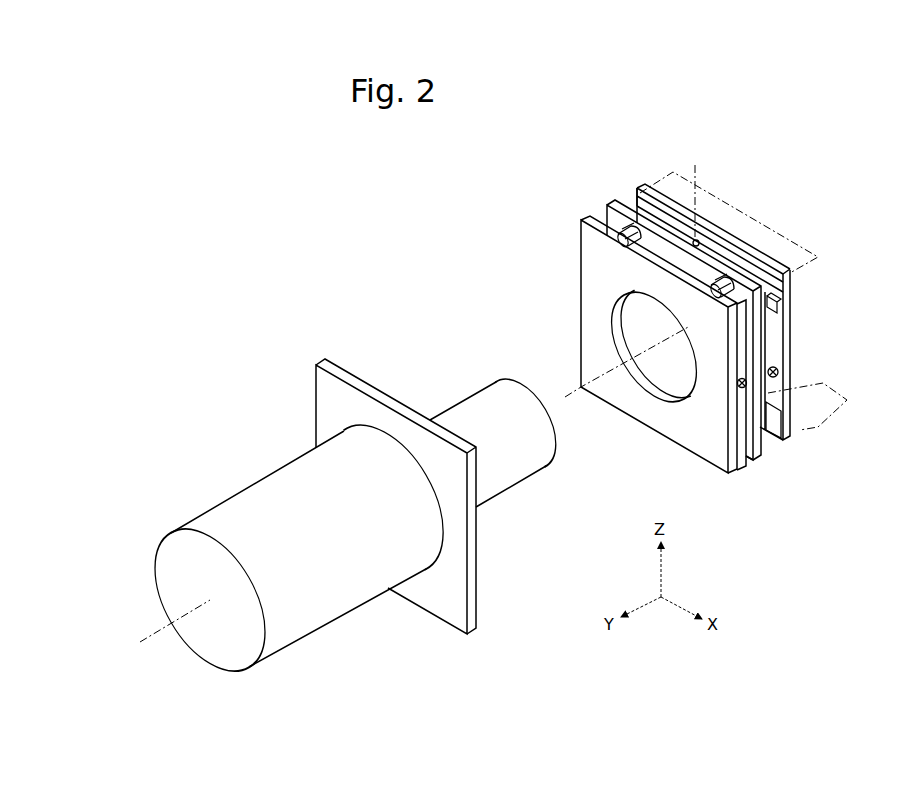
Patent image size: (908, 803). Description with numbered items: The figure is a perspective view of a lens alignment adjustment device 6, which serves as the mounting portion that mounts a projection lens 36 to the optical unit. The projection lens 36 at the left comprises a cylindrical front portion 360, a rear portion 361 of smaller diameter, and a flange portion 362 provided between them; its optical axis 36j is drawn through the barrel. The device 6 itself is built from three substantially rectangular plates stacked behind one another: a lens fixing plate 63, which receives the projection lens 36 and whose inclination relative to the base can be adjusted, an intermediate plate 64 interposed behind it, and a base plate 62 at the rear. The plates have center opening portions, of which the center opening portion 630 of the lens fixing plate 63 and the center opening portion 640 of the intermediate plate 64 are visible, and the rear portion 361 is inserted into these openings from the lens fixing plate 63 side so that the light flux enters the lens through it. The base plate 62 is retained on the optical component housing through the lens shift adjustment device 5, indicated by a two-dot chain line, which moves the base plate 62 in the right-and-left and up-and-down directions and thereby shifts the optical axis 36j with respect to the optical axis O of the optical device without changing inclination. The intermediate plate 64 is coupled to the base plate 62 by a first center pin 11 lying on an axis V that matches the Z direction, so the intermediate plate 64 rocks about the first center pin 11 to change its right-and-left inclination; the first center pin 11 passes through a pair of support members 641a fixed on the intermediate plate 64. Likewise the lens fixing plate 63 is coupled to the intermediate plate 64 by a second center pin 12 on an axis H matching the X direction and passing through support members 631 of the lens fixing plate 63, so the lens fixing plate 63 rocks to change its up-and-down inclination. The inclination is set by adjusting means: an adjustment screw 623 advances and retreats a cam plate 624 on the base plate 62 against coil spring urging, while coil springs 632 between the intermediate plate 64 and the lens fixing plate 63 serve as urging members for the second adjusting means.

The lens shift adjustment device 5 is at (822, 296).
The lens alignment adjustment device 6 is at (644, 428).
The first center pin 11 is at (698, 240).
The second center pin 12 is at (741, 388).
The projection lens 36 is at (252, 466).
The front portion 360 is at (217, 520).
The rear portion 361 is at (477, 402).
The flange portion 362 is at (347, 360).
The optical axis 36j is at (153, 633).
The base plate 62 is at (792, 430).
The adjustment screw 623 is at (780, 372).
The cam plate 624 is at (779, 328).
The lens fixing plate 63 is at (738, 472).
The center opening portion 630 is at (612, 335).
The support members 631 is at (750, 455).
The coil springs 632 is at (656, 187).
The intermediate plate 64 is at (765, 452).
The center opening portion 640 is at (658, 367).
The support members 641a is at (633, 212).
The axis V is at (729, 210).
The axis H is at (810, 418).
The optical axis O is at (622, 365).